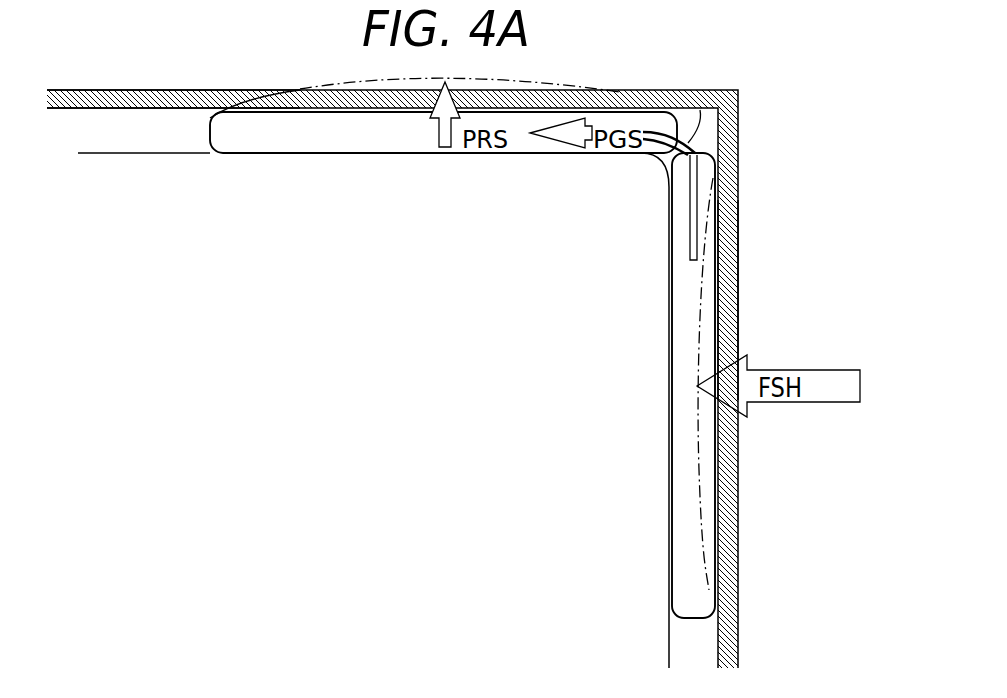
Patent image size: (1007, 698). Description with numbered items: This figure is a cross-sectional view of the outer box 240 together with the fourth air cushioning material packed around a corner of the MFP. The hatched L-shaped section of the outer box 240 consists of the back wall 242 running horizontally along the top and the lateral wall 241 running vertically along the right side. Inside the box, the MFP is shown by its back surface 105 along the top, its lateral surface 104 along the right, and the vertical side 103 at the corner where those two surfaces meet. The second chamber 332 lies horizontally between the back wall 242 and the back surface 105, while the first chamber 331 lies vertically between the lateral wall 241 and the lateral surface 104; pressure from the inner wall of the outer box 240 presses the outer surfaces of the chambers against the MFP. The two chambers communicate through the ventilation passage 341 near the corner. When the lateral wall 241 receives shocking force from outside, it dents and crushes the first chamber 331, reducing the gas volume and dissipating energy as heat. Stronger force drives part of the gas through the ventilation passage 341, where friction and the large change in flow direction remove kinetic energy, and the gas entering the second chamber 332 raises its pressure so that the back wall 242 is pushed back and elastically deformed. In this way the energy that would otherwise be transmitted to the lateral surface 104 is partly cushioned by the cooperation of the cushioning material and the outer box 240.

The outer box 240 is at (745, 99).
The lateral wall 241 is at (740, 288).
The back wall 242 is at (143, 90).
The first chamber 331 is at (682, 385).
The second chamber 332 is at (395, 140).
The ventilation passage 341 is at (699, 108).
The vertical side 103 is at (656, 157).
The lateral surface 104 is at (669, 658).
The back surface 105 is at (178, 150).